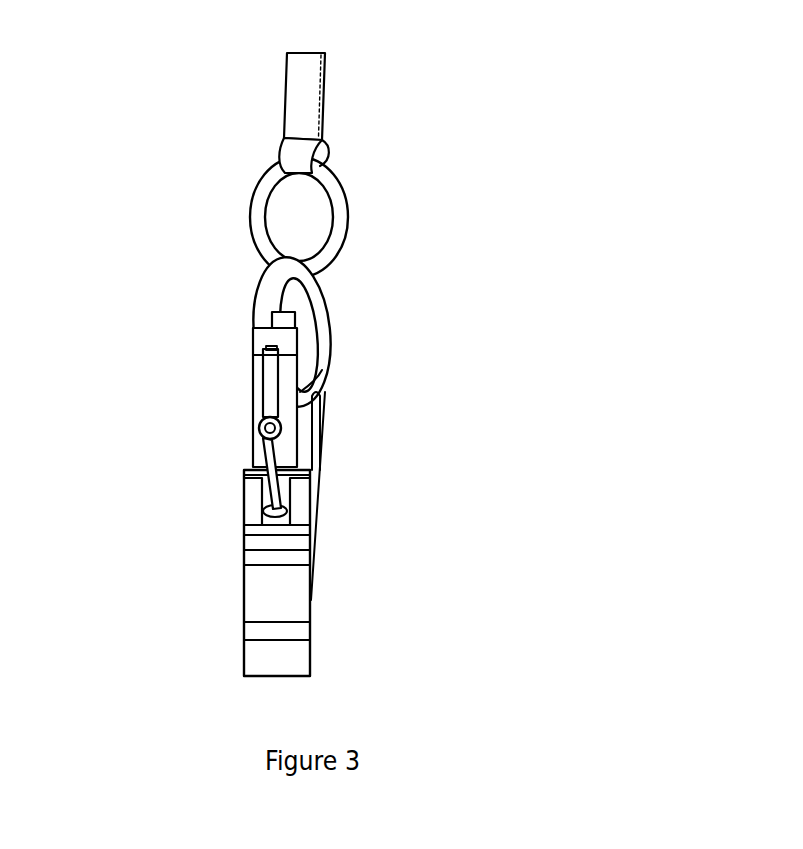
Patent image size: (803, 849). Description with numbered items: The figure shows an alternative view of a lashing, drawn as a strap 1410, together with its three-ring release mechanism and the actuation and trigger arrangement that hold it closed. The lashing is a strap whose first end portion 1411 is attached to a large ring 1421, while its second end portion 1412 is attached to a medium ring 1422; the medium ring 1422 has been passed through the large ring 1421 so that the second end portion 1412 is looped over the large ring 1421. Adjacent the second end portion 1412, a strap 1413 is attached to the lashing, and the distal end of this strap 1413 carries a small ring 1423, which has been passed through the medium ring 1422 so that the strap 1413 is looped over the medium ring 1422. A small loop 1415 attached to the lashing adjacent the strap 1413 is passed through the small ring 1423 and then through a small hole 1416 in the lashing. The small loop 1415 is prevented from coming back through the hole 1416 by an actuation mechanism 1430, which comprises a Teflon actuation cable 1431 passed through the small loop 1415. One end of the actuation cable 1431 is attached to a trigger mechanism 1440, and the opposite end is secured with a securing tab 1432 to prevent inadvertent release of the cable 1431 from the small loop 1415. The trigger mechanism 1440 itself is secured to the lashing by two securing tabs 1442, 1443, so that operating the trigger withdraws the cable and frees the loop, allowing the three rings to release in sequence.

The strap 1410 is at (312, 83).
The first end portion 1411 is at (327, 155).
The second end portion 1412 is at (273, 292).
The strap 1413 is at (307, 435).
The small loop 1415 is at (262, 427).
The small hole 1416 is at (287, 421).
The large ring 1421 is at (342, 218).
The medium ring 1422 is at (322, 332).
The small ring 1423 is at (307, 402).
The actuation mechanism 1430 is at (282, 456).
The actuation cable 1431 is at (247, 455).
The securing tab 1432 is at (258, 370).
The trigger mechanism 1440 is at (281, 557).
The securing tab 1442 is at (300, 543).
The securing tab 1443 is at (300, 632).